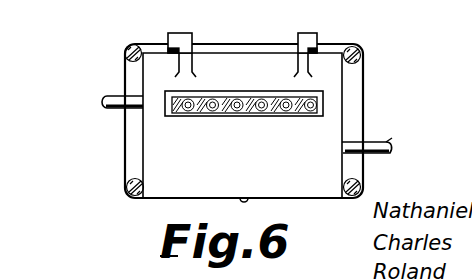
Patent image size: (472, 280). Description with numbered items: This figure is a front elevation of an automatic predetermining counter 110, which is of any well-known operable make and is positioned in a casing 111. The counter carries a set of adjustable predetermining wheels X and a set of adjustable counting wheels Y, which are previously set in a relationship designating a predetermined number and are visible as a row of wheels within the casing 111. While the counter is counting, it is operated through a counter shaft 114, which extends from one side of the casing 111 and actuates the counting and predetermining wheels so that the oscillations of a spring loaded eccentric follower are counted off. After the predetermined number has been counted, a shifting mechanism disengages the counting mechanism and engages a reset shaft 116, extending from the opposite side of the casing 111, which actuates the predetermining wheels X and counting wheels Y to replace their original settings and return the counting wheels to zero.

The predetermining counter 110 is at (333, 103).
The casing 111 is at (332, 50).
The counter shaft 114 is at (392, 139).
The reset shaft 116 is at (113, 106).
The predetermining wheels X is at (304, 113).
The counting wheels Y is at (268, 93).